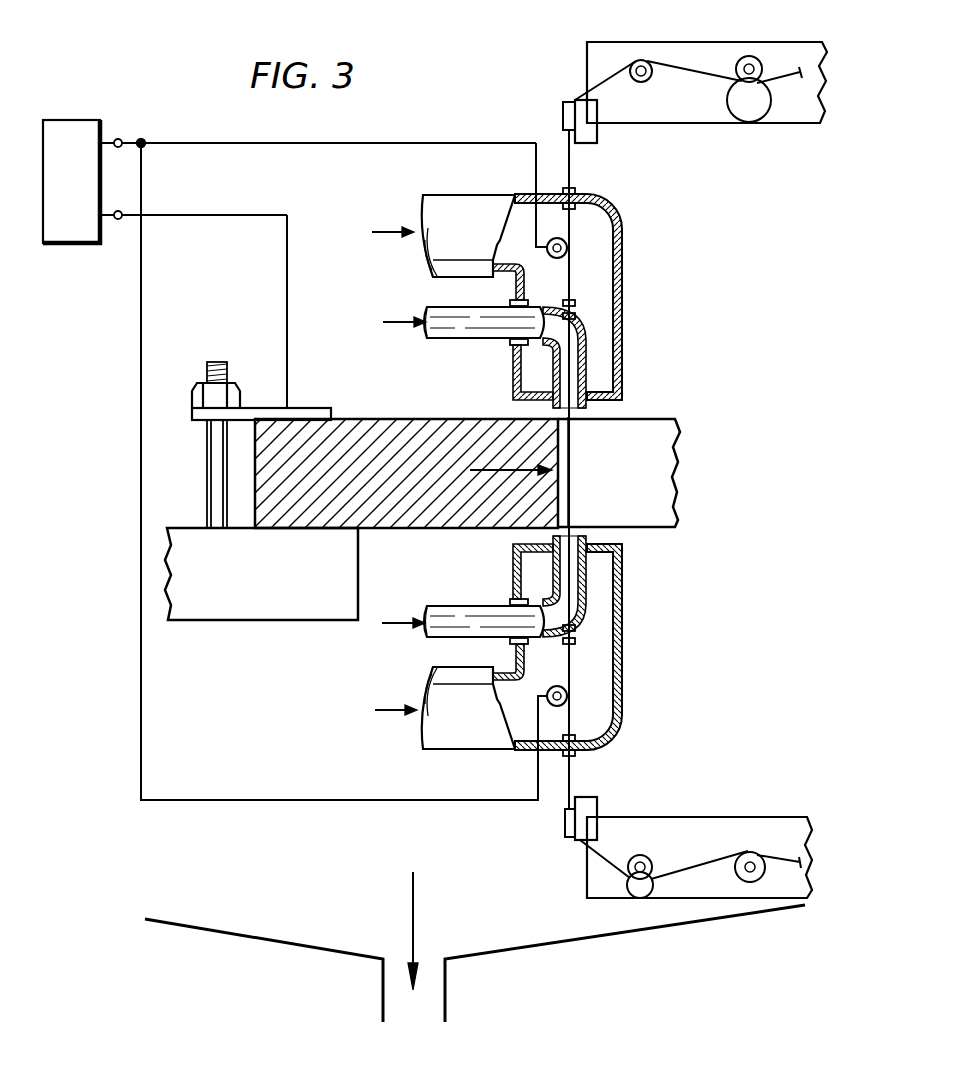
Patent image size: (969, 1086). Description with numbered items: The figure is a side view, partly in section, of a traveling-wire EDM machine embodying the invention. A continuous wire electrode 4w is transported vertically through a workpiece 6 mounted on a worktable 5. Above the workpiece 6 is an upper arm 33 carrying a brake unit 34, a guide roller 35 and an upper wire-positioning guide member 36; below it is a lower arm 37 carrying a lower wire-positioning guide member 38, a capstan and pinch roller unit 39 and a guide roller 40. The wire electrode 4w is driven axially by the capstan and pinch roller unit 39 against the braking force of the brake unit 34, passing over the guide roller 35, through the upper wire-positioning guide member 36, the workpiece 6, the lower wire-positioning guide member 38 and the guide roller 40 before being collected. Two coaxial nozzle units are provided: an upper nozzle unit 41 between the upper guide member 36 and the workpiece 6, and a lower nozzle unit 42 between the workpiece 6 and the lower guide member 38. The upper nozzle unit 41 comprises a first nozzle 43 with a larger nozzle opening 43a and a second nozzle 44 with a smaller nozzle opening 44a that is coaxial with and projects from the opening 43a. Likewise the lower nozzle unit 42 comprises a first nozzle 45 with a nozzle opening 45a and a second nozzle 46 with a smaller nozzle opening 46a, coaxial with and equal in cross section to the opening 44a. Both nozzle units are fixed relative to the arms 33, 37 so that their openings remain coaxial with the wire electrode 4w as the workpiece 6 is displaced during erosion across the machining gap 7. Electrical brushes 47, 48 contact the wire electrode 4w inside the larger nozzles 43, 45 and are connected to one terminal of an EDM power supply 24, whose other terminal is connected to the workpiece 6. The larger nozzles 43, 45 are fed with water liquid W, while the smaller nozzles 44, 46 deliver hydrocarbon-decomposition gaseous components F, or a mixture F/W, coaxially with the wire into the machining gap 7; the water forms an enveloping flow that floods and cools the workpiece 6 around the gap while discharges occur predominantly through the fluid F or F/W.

The EDM power supply 24 is at (73, 245).
The worktable 5 is at (268, 614).
The workpiece 6 is at (420, 419).
The machining gap 7 is at (566, 503).
The wire electrode 4w is at (571, 447).
The upper arm 33 is at (787, 124).
The brake unit 34 is at (720, 95).
The guide roller 35 is at (646, 82).
The upper wire-positioning guide member 36 is at (562, 112).
The lower arm 37 is at (636, 817).
The lower wire-positioning guide member 38 is at (562, 830).
The capstan and pinch roller unit 39 is at (648, 855).
The guide roller 40 is at (746, 852).
The upper nozzle unit 41 is at (525, 306).
The lower nozzle unit 42 is at (515, 643).
The first nozzle 43 is at (623, 300).
The nozzle opening 43a is at (625, 395).
The second nozzle 44 is at (587, 365).
The nozzle opening 44a is at (580, 410).
The first nozzle 45 is at (623, 628).
The nozzle opening 45a is at (600, 548).
The second nozzle 46 is at (587, 586).
The nozzle opening 46a is at (555, 533).
The electrical brush 47 is at (567, 249).
The electrical brush 48 is at (567, 697).